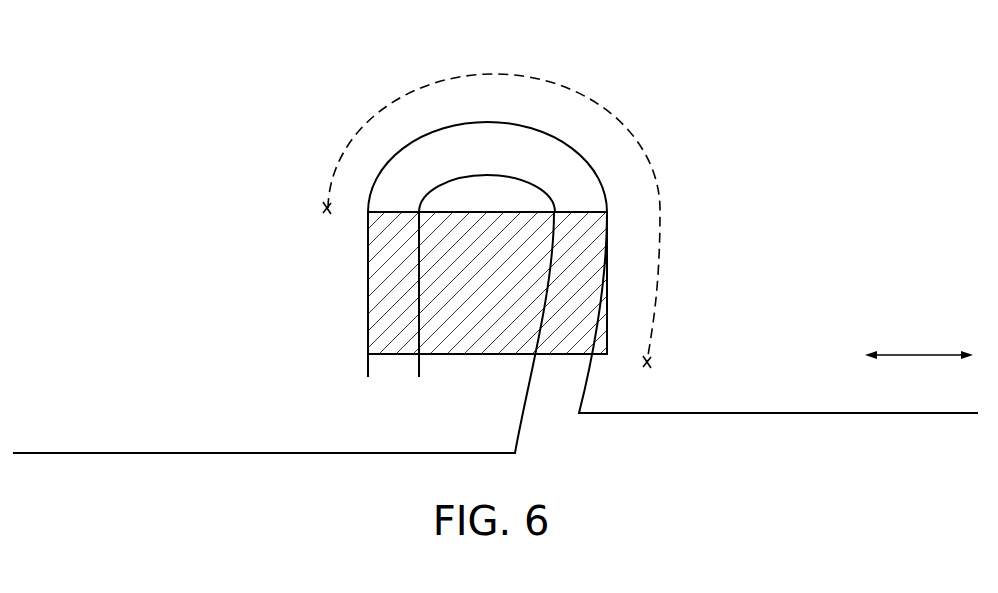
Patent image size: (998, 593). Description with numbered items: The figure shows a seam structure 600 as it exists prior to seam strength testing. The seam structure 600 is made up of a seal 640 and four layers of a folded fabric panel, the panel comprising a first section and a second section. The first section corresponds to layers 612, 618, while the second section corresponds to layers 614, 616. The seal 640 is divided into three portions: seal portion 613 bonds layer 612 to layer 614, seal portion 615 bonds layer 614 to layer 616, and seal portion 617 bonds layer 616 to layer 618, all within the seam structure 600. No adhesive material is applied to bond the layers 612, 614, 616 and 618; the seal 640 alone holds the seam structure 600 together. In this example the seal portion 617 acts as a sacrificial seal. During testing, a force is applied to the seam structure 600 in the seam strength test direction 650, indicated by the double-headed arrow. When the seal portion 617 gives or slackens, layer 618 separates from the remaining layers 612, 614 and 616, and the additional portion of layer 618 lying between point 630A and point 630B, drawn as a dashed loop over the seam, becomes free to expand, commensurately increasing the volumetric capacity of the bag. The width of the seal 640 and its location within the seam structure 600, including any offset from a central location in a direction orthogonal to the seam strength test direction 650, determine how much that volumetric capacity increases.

The seam structure 600 is at (203, 97).
The layer 612 is at (368, 377).
The seal portion 613 is at (397, 222).
The layer 614 is at (419, 377).
The seal portion 615 is at (473, 343).
The layer 616 is at (520, 423).
The seal portion 617 is at (575, 343).
The layer 618 is at (585, 378).
The point 630A is at (322, 205).
The point 630B is at (652, 362).
The seal 640 is at (352, 334).
The seam strength test direction 650 is at (920, 355).